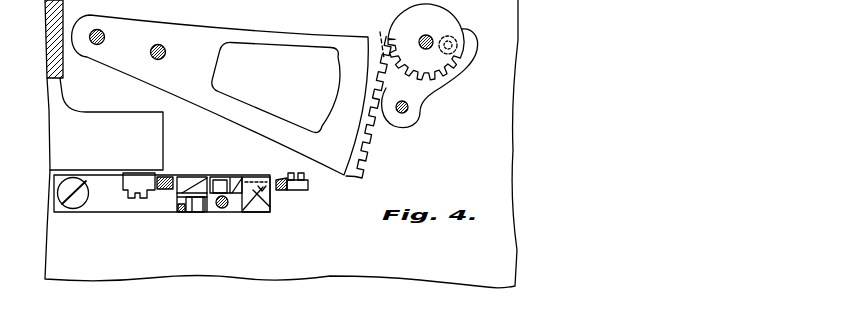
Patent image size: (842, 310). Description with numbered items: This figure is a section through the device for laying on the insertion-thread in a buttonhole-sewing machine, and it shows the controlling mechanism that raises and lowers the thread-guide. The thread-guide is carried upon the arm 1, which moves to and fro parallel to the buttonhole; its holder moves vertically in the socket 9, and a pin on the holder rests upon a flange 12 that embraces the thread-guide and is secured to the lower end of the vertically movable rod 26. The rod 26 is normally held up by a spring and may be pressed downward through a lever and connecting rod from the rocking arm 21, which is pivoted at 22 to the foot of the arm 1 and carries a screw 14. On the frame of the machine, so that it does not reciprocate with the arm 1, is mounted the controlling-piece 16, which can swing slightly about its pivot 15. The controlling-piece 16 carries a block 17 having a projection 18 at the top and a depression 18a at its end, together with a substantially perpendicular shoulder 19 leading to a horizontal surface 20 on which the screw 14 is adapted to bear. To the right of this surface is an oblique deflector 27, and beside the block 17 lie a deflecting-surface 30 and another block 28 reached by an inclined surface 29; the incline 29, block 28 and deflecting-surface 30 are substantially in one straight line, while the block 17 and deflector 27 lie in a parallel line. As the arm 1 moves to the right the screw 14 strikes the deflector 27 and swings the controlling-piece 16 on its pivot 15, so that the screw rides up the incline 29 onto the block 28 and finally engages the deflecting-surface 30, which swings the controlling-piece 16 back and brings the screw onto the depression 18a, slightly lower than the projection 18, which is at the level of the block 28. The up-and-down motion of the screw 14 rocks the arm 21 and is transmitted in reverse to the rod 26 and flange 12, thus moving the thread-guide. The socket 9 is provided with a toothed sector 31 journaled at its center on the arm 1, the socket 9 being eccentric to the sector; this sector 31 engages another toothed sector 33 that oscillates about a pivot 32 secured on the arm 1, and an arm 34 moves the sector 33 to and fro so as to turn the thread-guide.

The arm 1 is at (62, 136).
The socket 9 is at (457, 36).
The flange 12 is at (425, 94).
The screw 14 is at (214, 193).
The pivot 15 is at (73, 209).
The controlling-piece 16 is at (165, 205).
The block 17 is at (190, 208).
The projection 18 is at (200, 210).
The depression 18a is at (180, 212).
The shoulder 19 is at (222, 208).
The horizontal surface 20 is at (235, 206).
The rocking arm 21 is at (308, 188).
The pivot 22 is at (130, 182).
The rod 26 is at (407, 112).
The deflector 27 is at (270, 208).
The block 28 is at (224, 186).
The inclined surface 29 is at (243, 183).
The deflecting-surface 30 is at (192, 193).
The toothed sector 31 is at (438, 63).
The pivot 32 is at (104, 37).
The toothed sector 33 is at (357, 145).
The arm 34 is at (165, 53).